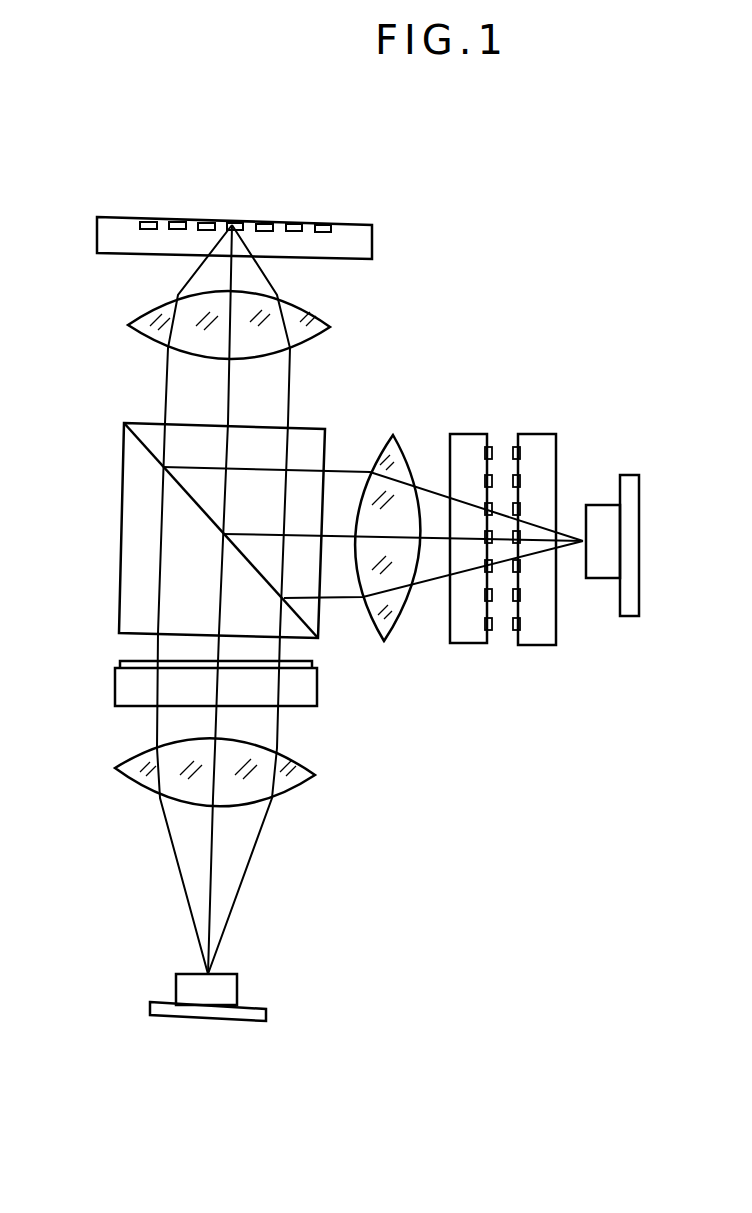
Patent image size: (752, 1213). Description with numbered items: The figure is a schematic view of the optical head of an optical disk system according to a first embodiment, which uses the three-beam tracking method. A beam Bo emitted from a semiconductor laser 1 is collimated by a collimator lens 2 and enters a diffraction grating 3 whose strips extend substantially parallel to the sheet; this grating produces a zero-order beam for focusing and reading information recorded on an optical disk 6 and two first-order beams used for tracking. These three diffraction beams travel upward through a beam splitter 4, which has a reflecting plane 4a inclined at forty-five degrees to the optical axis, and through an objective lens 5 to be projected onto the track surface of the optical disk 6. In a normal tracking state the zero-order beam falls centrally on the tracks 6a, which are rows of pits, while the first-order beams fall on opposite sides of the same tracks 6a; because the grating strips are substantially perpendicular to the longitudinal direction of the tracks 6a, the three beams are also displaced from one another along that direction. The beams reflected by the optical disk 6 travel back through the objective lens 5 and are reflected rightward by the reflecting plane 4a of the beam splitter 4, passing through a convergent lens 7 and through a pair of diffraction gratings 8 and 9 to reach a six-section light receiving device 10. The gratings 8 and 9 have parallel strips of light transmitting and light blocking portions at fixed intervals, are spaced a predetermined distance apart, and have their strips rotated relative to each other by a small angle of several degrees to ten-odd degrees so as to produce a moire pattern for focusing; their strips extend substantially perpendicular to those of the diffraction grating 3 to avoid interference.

The semiconductor laser 1 is at (237, 985).
The beam Bo is at (190, 913).
The collimator lens 2 is at (142, 782).
The diffraction grating 3 is at (115, 686).
The beam splitter 4 is at (120, 550).
The reflecting plane 4a is at (140, 442).
The objective lens 5 is at (140, 332).
The optical disk 6 is at (127, 218).
The tracks 6a is at (322, 226).
The convergent lens 7 is at (392, 437).
The diffraction grating 8 is at (468, 434).
The diffraction grating 9 is at (548, 435).
The six-section light receiving device 10 is at (602, 506).